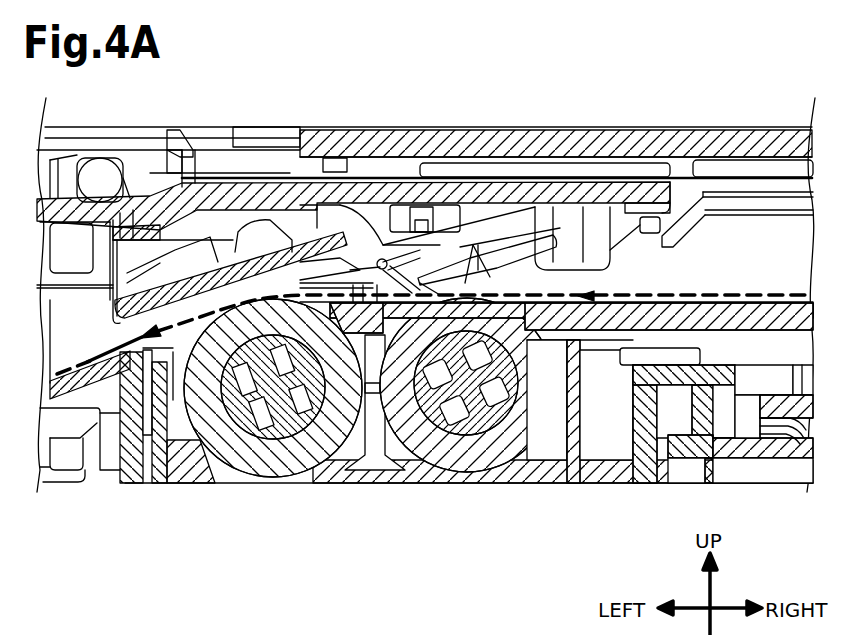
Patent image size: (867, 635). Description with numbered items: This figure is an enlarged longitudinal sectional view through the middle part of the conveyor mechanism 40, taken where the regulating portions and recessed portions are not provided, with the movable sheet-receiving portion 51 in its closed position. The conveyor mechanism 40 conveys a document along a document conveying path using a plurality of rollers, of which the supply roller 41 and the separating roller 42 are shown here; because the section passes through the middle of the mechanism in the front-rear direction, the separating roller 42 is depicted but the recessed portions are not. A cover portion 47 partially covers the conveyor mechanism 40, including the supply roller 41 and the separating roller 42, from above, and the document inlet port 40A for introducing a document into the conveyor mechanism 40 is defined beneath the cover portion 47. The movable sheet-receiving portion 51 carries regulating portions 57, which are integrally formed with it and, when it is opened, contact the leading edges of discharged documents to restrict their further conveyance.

The conveyor mechanism 40 is at (553, 510).
The document inlet port 40A is at (680, 255).
The supply roller 41 is at (463, 462).
The separating roller 42 is at (268, 468).
The cover portion 47 is at (73, 192).
The movable sheet-receiving portion 51 is at (640, 128).
The regulating portion 57 is at (175, 190).